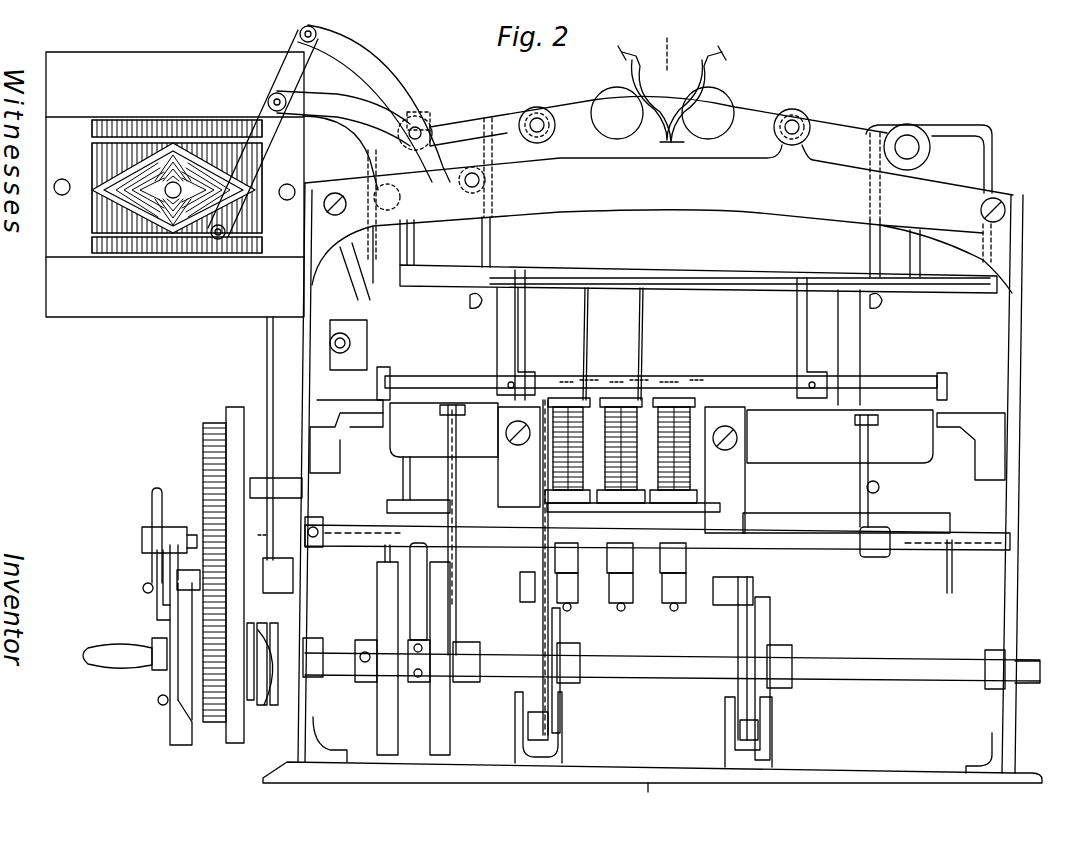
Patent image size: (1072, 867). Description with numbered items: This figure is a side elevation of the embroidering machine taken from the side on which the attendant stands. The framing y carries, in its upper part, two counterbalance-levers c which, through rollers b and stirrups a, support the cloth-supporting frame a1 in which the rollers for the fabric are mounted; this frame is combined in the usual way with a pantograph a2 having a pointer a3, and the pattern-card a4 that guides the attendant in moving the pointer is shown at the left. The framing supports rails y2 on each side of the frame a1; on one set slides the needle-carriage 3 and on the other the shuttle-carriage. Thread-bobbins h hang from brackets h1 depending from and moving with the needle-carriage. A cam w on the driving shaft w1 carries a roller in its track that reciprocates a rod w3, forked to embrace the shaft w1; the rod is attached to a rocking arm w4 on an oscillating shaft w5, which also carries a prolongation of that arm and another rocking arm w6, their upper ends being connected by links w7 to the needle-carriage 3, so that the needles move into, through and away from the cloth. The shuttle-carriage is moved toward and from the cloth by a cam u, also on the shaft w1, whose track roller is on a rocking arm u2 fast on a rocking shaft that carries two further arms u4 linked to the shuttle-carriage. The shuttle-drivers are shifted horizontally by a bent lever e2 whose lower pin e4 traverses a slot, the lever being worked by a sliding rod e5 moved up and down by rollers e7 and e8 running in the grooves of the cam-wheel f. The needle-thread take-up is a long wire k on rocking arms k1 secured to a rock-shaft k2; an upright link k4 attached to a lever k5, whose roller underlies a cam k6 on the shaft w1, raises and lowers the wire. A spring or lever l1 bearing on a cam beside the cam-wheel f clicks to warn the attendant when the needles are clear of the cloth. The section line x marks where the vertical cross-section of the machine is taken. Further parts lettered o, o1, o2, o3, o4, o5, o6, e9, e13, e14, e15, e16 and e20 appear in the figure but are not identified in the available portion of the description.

The stirrups a is at (718, 144).
The cloth-supporting frame a1 is at (639, 320).
The pantograph a2 is at (374, 103).
The pointer a3 is at (263, 134).
The pattern-card a4 is at (175, 184).
The rollers b is at (945, 152).
The counterbalance-levers c is at (662, 113).
The section line x is at (672, 414).
The framing y is at (665, 275).
The rails y2 is at (657, 440).
The take-up wire k is at (740, 289).
The rocking arms k1 is at (520, 325).
The rock-shaft k2 is at (662, 374).
The upright link k4 is at (542, 622).
The lever k5 is at (538, 727).
The cam k6 is at (560, 622).
The needle-carriage 3 is at (661, 433).
The thread-bobbins h is at (632, 455).
The brackets h1 is at (621, 470).
The cam w is at (444, 658).
The shaft w1 is at (671, 663).
The rod w3 is at (437, 514).
The rocking arm w4 is at (460, 585).
The oscillating shaft w5 is at (665, 528).
The rocking arm w6 is at (884, 482).
The links w7 is at (888, 427).
The cam u is at (382, 658).
The rocking arm u2 is at (406, 591).
The arms u4 is at (419, 478).
The block o is at (620, 558).
The block o1 is at (603, 591).
The block o2 is at (735, 581).
The bar o3 is at (735, 658).
The bracket o4 is at (745, 750).
The bracket o5 is at (772, 722).
The bar o6 is at (770, 607).
The bent lever e2 is at (356, 263).
The pin e4 is at (352, 347).
The sliding rod e5 is at (282, 438).
The roller e7 is at (156, 609).
The roller e8 is at (165, 680).
The pawl e9 is at (269, 678).
The pivot e13 is at (170, 717).
The lever e14 is at (168, 630).
The plate e15 is at (194, 645).
The lever e16 is at (169, 523).
The pawl e20 is at (250, 678).
The cam-wheel f is at (223, 562).
The spring or lever l1 is at (286, 535).